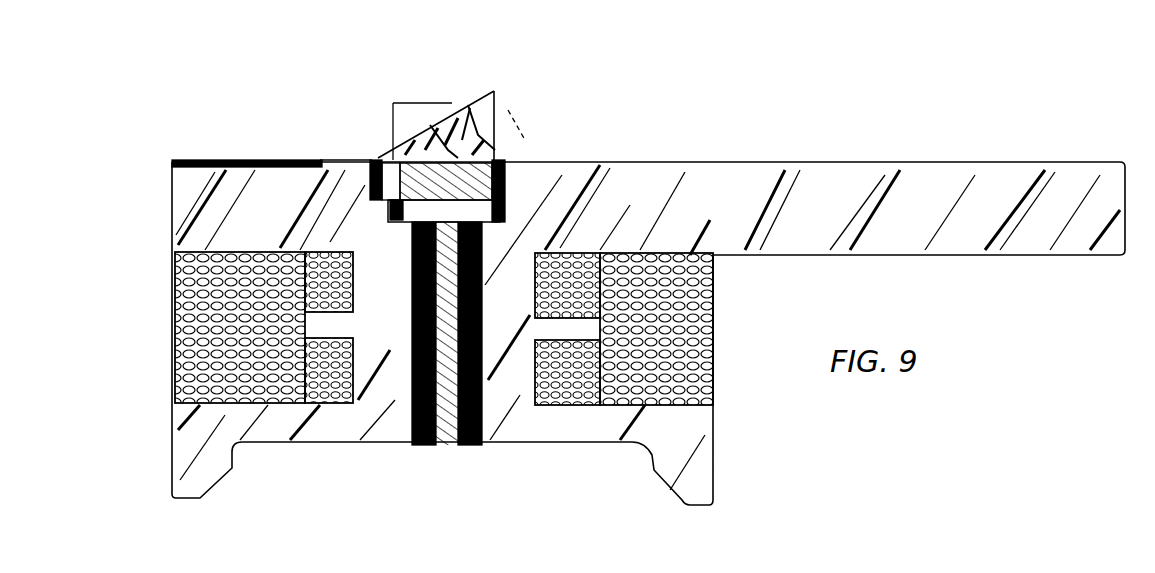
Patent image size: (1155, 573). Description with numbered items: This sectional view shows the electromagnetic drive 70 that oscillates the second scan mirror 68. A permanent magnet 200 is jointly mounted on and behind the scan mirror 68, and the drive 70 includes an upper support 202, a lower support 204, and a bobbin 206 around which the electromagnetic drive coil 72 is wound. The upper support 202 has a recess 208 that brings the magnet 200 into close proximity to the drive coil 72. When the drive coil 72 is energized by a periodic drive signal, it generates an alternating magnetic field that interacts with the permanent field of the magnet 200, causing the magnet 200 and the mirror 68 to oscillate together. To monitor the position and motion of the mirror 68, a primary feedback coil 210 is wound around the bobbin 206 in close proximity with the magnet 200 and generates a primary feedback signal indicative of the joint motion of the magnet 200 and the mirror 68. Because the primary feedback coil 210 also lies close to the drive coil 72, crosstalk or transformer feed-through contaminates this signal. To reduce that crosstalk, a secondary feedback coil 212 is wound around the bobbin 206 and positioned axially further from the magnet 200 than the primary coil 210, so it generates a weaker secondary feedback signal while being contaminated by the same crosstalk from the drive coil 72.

The electromagnetic drive 70 is at (786, 410).
The electromagnetic drive coil 72 is at (714, 330).
The second scan mirror 68 is at (455, 108).
The permanent magnet 200 is at (500, 158).
The upper support 202 is at (955, 170).
The lower support 204 is at (611, 432).
The bobbin 206 is at (500, 388).
The recess 208 is at (365, 187).
The primary feedback coil 210 is at (603, 245).
The secondary feedback coil 212 is at (545, 395).